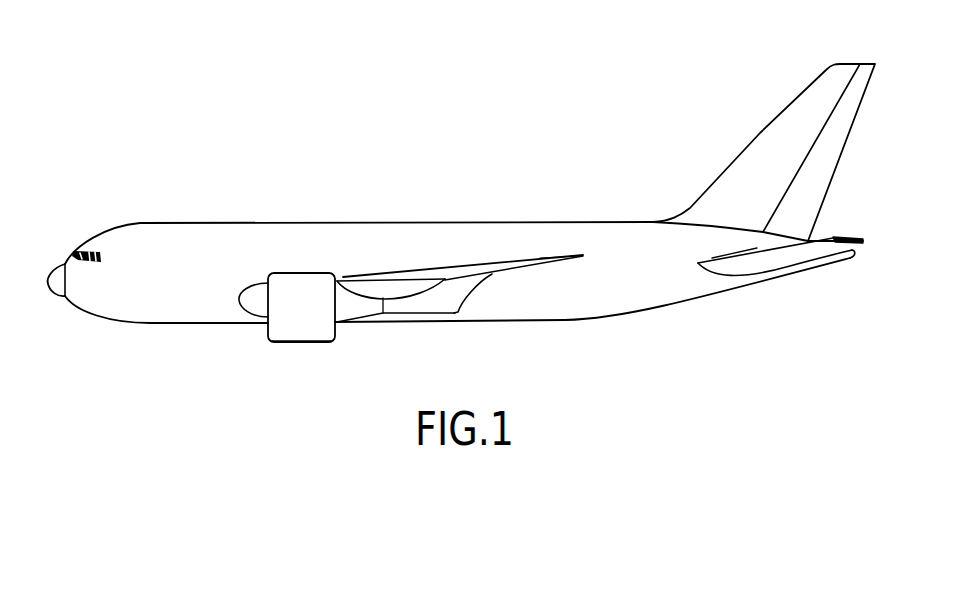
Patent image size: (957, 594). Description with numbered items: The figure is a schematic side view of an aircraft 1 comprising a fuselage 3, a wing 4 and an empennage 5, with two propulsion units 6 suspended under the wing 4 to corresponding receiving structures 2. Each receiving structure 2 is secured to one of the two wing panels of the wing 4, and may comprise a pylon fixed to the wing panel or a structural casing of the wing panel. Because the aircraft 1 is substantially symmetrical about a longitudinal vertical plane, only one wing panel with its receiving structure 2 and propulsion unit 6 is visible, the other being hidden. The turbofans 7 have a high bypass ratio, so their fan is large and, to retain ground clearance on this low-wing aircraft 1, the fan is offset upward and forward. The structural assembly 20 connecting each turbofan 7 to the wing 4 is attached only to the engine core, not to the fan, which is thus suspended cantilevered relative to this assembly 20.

The aircraft 1 is at (551, 88).
The receiving structure 2 is at (433, 270).
The structural assembly 20 is at (392, 288).
The fuselage 3 is at (585, 290).
The wing 4 is at (490, 276).
The empennage 5 is at (702, 277).
The propulsion unit 6 is at (295, 353).
The turbofan 7 is at (298, 288).